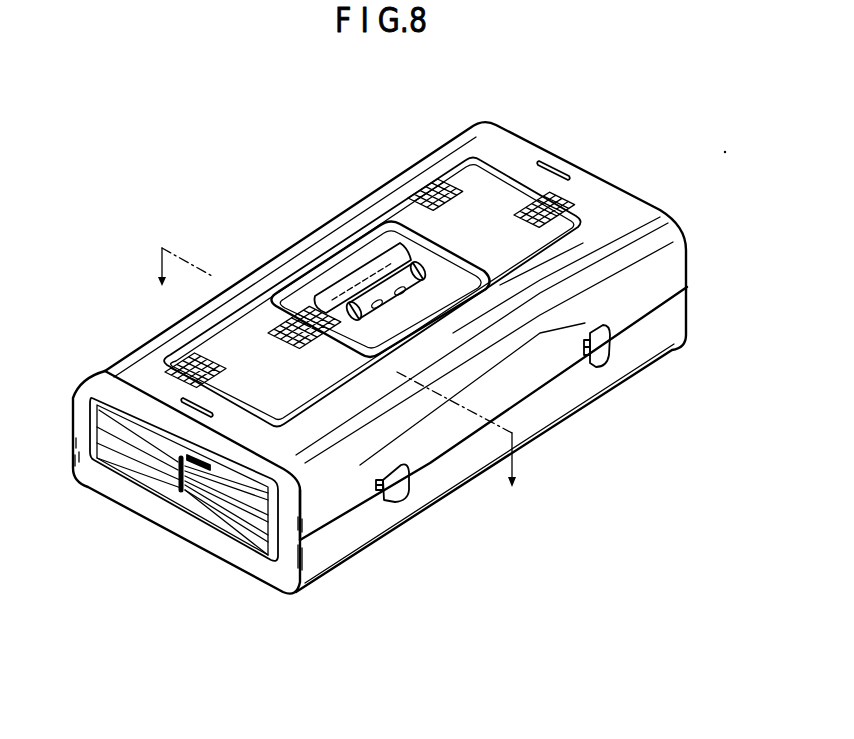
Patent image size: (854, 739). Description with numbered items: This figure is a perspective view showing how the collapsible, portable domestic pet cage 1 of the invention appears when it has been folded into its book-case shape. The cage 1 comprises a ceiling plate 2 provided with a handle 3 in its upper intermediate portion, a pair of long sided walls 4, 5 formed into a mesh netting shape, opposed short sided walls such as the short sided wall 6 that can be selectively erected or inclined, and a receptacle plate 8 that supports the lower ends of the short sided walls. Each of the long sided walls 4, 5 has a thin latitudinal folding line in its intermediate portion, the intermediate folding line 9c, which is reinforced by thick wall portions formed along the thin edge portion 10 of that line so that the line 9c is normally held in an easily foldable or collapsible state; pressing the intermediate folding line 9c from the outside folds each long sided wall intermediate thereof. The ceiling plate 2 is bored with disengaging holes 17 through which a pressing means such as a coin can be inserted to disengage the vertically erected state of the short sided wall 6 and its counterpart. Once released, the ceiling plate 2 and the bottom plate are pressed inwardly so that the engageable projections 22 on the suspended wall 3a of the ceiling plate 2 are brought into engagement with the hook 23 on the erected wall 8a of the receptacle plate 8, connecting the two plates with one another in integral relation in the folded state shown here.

The collapsible portable domestic pet cage 1 is at (388, 367).
The ceiling plate 2 is at (187, 444).
The handle 3 is at (343, 262).
The suspended wall 3a is at (667, 265).
The long sided wall 4 is at (252, 500).
The long sided wall 5 is at (145, 470).
The short sided wall 6 is at (200, 510).
The receptacle plate 8 is at (497, 459).
The erected wall 8a is at (550, 405).
The intermediate folding line 9c is at (164, 465).
The thin edge portion 10 is at (217, 440).
The disengaging holes 17 is at (557, 165).
The engageable projections 22 is at (378, 492).
The hook 23 is at (400, 478).